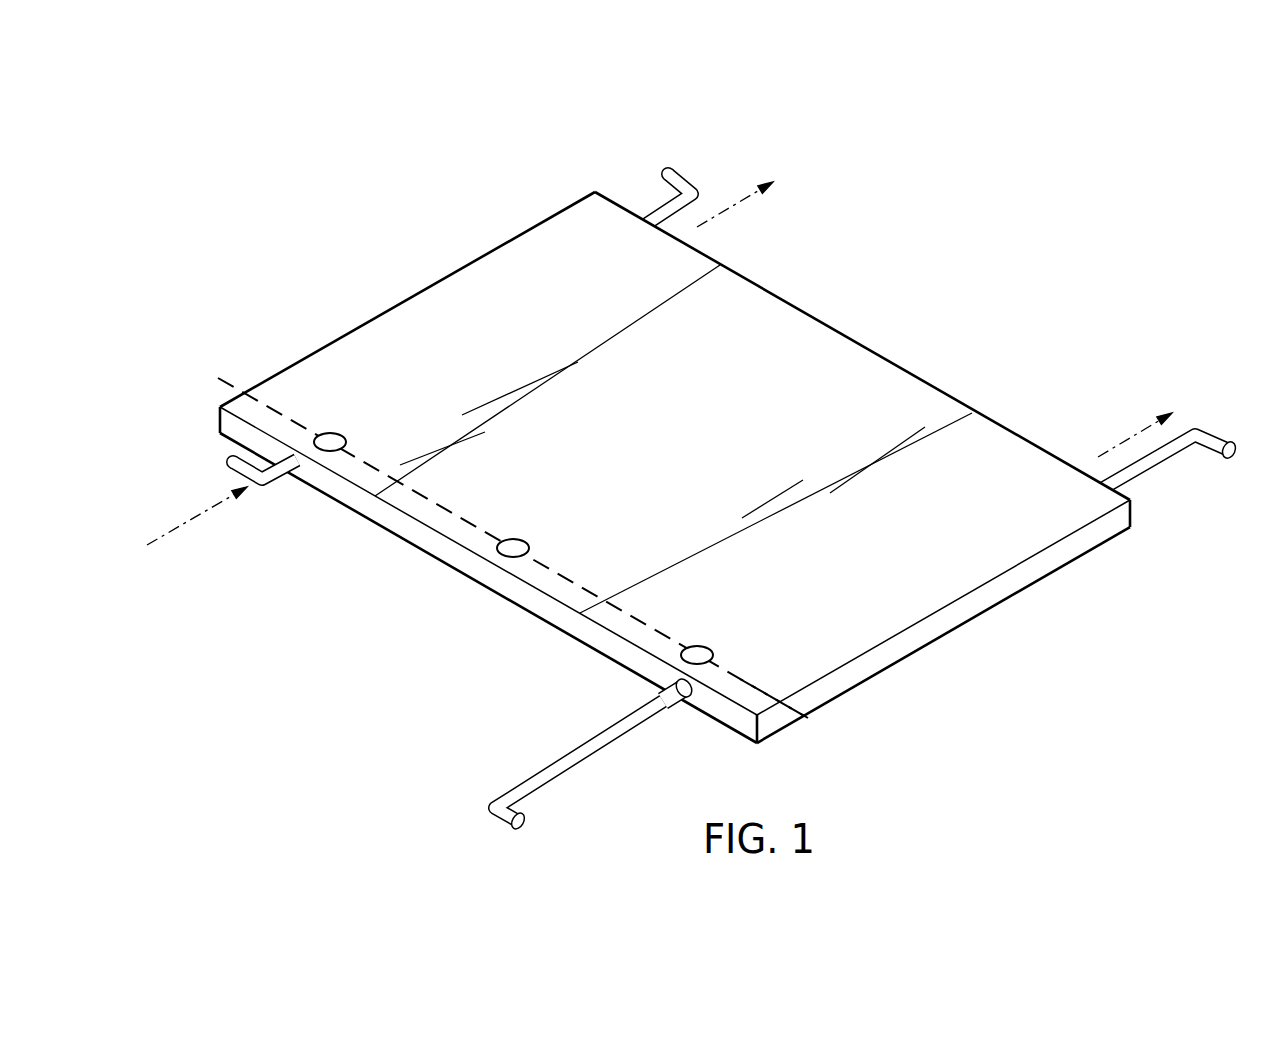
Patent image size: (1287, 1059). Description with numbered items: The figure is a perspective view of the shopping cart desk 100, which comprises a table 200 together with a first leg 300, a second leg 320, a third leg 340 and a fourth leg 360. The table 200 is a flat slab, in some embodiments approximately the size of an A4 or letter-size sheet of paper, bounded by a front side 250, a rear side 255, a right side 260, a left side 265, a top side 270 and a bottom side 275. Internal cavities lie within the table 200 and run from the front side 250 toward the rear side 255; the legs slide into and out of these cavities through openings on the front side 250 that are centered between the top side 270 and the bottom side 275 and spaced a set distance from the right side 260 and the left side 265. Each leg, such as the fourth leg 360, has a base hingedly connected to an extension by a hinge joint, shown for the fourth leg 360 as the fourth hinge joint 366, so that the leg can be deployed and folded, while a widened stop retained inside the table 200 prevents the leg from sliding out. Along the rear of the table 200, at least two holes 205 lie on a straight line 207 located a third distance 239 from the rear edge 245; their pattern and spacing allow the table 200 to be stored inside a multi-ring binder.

The shopping cart desk 100 is at (1045, 194).
The table 200 is at (675, 443).
The holes 205 is at (662, 647).
The straight line 207 is at (215, 376).
The third distance 239 is at (766, 673).
The rear edge 245 is at (533, 597).
The front side 250 is at (922, 363).
The rear side 255 is at (622, 672).
The right side 260 is at (451, 256).
The left side 265 is at (905, 660).
The top side 270 is at (596, 216).
The bottom side 275 is at (858, 702).
The first leg 300 is at (686, 176).
The second leg 320 is at (1221, 438).
The third leg 340 is at (228, 463).
The fourth leg 360 is at (595, 763).
The fourth hinge joint 366 is at (670, 694).